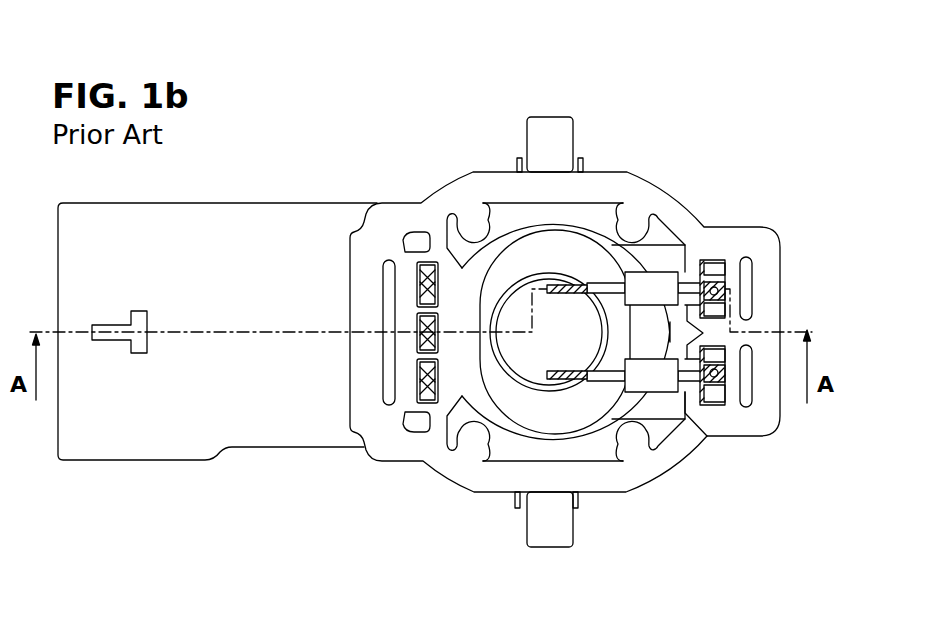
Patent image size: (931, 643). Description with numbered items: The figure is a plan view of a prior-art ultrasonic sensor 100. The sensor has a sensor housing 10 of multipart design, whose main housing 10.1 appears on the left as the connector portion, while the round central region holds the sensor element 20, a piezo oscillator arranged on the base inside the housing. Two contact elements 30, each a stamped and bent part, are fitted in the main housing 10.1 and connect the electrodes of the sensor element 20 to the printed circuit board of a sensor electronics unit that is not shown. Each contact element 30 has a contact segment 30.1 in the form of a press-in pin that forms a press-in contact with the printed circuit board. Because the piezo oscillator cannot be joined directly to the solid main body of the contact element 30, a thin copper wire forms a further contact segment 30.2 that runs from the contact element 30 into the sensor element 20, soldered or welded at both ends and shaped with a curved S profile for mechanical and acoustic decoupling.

The ultrasonic sensor 100 is at (458, 88).
The sensor housing 10 is at (378, 186).
The main housing 10.1 is at (245, 262).
The sensor element 20 is at (533, 354).
The contact element 30 is at (662, 265).
The contact segment (press-in pin) 30.1 is at (722, 373).
The contact wire (further contact segment) 30.2 is at (568, 287).